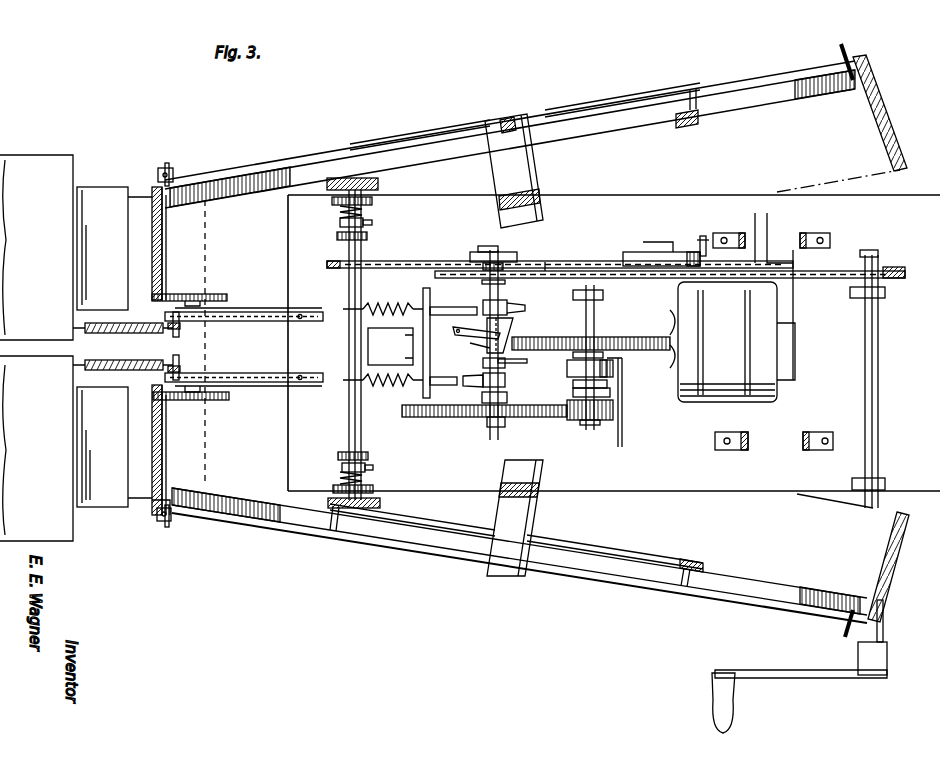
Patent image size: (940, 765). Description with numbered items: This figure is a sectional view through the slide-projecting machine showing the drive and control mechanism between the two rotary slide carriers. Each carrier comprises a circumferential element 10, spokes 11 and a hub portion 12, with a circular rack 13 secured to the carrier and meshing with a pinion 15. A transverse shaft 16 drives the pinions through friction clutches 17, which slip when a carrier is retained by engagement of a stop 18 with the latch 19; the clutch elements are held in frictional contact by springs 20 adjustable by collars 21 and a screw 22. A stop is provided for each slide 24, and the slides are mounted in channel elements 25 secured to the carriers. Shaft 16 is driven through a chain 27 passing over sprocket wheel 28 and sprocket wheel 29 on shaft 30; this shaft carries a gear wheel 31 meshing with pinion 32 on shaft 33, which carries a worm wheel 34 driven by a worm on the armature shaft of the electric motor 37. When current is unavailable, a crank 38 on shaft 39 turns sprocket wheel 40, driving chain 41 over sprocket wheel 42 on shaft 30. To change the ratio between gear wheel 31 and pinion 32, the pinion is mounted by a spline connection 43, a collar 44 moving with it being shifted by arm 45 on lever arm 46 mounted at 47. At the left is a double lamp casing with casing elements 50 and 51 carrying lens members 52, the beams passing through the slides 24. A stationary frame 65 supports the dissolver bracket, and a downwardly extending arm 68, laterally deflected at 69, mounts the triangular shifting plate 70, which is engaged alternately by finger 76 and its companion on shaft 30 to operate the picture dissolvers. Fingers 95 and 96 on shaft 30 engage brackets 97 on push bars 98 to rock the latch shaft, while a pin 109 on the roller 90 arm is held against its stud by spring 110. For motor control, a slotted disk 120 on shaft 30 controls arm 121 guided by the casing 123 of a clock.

The circumferential element 10 is at (782, 92).
The spokes 11 is at (648, 96).
The hub portion 12 is at (528, 122).
The circular rack 13 is at (450, 155).
The pinion 15 is at (372, 176).
The transverse shaft 16 is at (362, 246).
The friction clutch 17 is at (332, 201).
The stop 18 is at (849, 43).
The latch 19 is at (160, 526).
The spring 20 is at (364, 213).
The collar 21 is at (340, 224).
The screw 22 is at (373, 223).
The slide 24 is at (160, 238).
The channel element 25 is at (157, 178).
The chain 27 is at (402, 267).
The sprocket wheel 28 is at (337, 237).
The sprocket wheel 29 is at (548, 262).
The shaft 30 is at (505, 427).
The gear wheel 31 is at (440, 417).
The pinion 32 is at (617, 431).
The shaft 33 is at (596, 315).
The worm wheel 34 is at (651, 337).
The motor 37 is at (732, 342).
The crank 38 is at (772, 672).
The shaft 39 is at (880, 401).
The sprocket wheel 40 is at (895, 268).
The chain 41 is at (832, 246).
The sprocket wheel 42 is at (447, 262).
The spline connection 43 is at (575, 383).
The collar 44 is at (607, 385).
The arm 45 is at (611, 393).
The lever arm 46 is at (622, 425).
The lever mounting 47 is at (612, 364).
The casing element 50 is at (36, 247).
The casing element 51 is at (36, 448).
The lens member 52 is at (102, 347).
The stationary frame 65 is at (537, 484).
The arm 68 is at (462, 330).
The lateral deflection 69 is at (479, 344).
The plate 70 is at (514, 331).
The finger 76 is at (526, 363).
The roller 90 is at (218, 296).
The finger 95 is at (517, 308).
The finger 96 is at (483, 396).
The bracket 97 is at (455, 312).
The push bar 98 is at (312, 310).
The pin 109 is at (182, 333).
The spring 110 is at (126, 346).
The slotted disk 120 is at (512, 250).
The arm 121 is at (622, 252).
The casing 123 is at (703, 240).